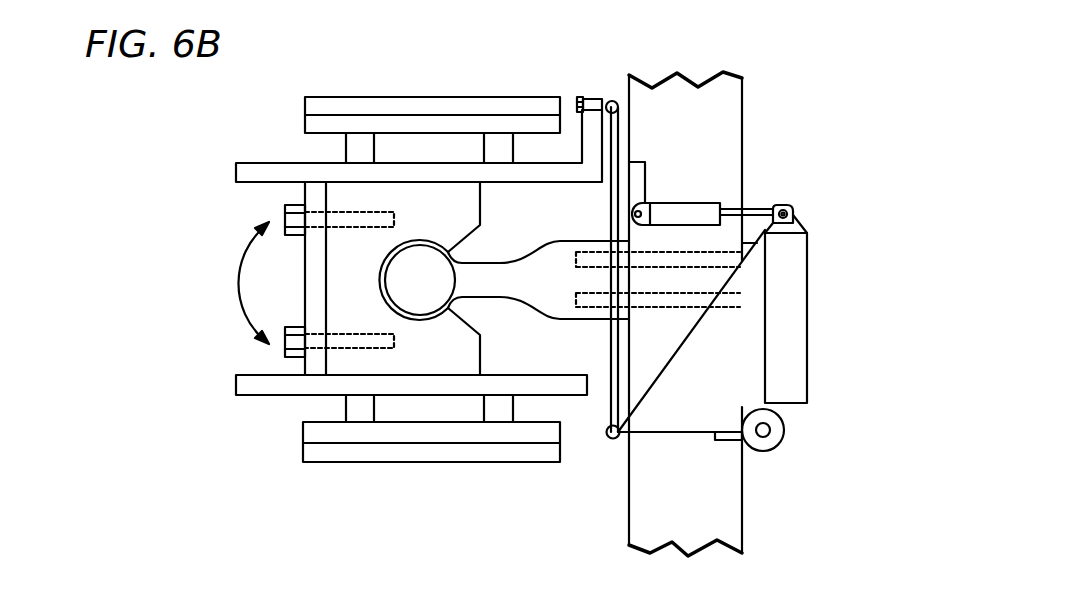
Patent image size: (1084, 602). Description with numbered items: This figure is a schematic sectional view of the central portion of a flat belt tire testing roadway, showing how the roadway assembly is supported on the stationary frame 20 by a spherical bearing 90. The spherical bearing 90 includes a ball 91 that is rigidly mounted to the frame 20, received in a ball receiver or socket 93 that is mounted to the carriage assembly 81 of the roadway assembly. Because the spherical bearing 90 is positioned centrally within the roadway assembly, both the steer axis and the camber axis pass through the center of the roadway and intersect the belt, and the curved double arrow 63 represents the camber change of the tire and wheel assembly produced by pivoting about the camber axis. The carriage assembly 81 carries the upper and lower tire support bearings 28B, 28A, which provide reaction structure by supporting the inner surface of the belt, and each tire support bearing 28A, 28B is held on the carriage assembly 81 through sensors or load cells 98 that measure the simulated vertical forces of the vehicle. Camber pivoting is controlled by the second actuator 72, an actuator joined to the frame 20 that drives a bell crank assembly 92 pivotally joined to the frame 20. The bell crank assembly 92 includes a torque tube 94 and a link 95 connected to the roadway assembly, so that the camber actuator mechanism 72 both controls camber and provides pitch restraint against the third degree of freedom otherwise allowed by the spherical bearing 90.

The frame 20 is at (697, 145).
The tire support bearing 28A is at (303, 462).
The tire support bearing 28B is at (305, 102).
The double arrow representing camber change 63 is at (384, 284).
The second actuator 72 is at (690, 203).
The carriage assembly 81 is at (262, 170).
The spherical bearing 90 is at (248, 297).
The ball 91 is at (418, 298).
The bell crank assembly 92 is at (720, 365).
The ball receiver or socket 93 is at (352, 257).
The torque tube 94 is at (797, 305).
The link 95 is at (610, 212).
The load cell 98 is at (346, 152).